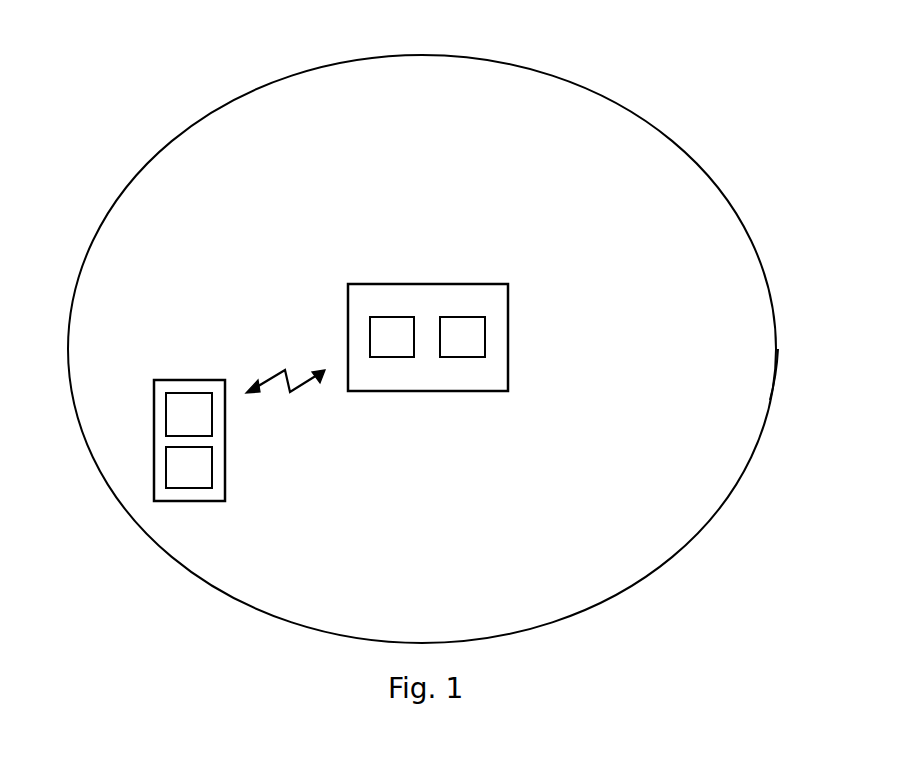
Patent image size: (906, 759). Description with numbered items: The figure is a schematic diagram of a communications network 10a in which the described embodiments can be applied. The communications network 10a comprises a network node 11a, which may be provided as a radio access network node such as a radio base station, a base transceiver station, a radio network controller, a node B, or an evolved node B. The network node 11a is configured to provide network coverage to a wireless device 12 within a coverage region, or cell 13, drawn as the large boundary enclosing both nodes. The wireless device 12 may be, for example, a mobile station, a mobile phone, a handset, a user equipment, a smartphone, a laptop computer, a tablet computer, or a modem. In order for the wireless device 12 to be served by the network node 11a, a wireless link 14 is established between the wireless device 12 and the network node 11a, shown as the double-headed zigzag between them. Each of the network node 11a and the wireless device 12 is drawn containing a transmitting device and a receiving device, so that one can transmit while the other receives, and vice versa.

The communications network 10a is at (162, 91).
The network node 11a is at (428, 284).
The wireless device 12 is at (196, 380).
The cell 13 is at (762, 419).
The wireless link 14 is at (295, 393).